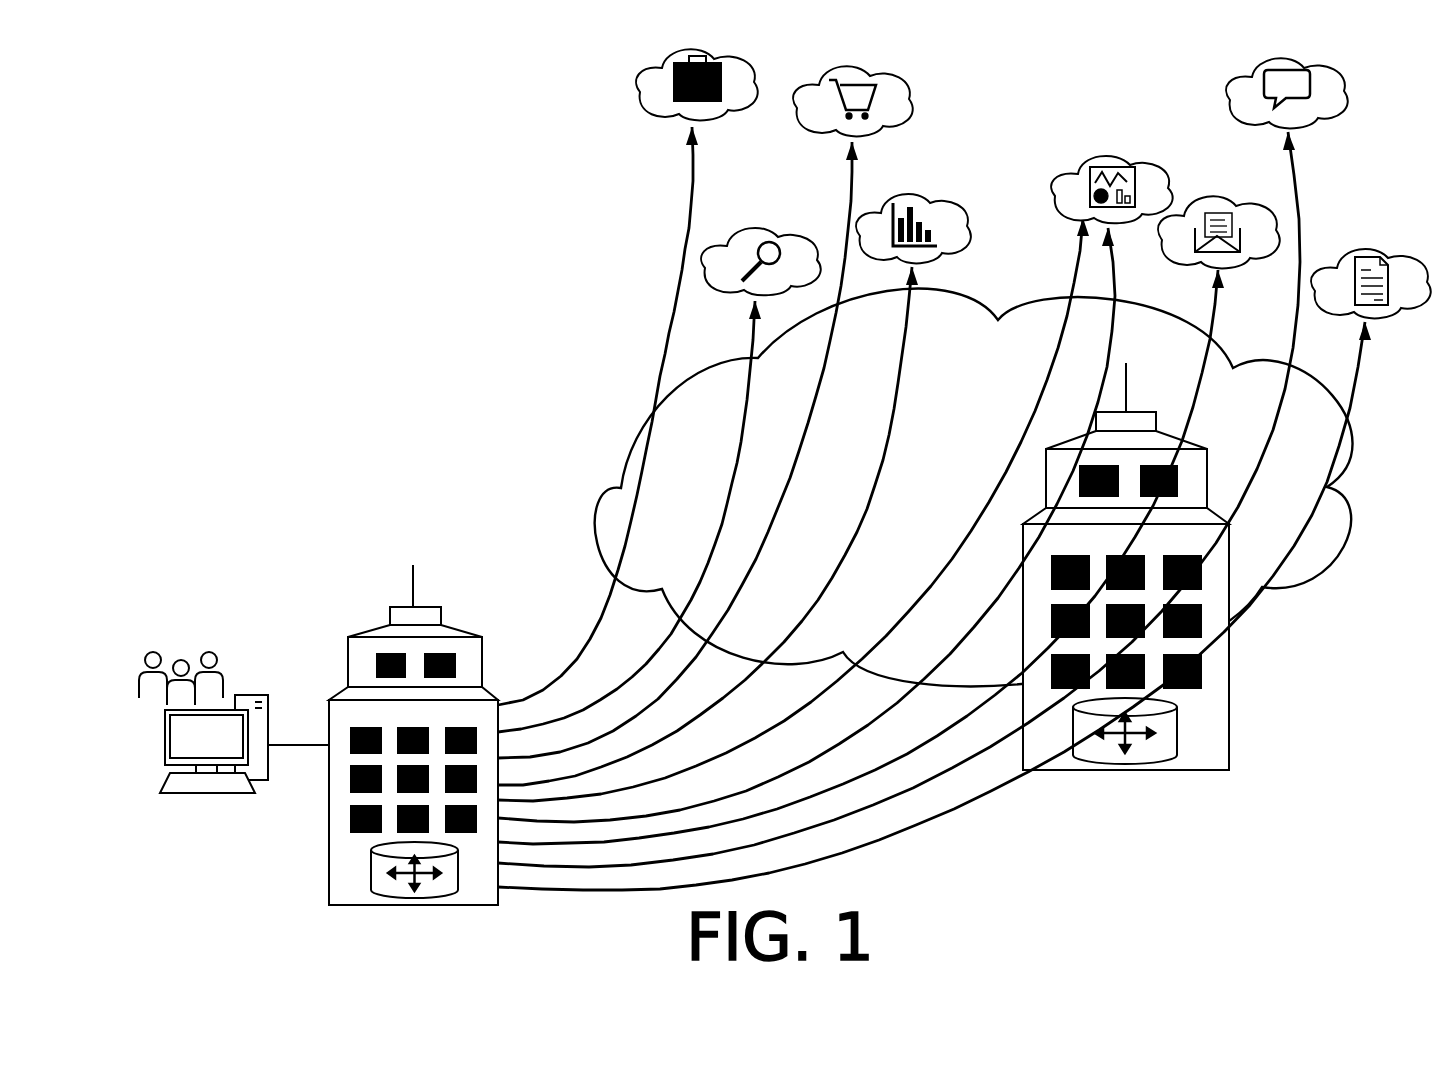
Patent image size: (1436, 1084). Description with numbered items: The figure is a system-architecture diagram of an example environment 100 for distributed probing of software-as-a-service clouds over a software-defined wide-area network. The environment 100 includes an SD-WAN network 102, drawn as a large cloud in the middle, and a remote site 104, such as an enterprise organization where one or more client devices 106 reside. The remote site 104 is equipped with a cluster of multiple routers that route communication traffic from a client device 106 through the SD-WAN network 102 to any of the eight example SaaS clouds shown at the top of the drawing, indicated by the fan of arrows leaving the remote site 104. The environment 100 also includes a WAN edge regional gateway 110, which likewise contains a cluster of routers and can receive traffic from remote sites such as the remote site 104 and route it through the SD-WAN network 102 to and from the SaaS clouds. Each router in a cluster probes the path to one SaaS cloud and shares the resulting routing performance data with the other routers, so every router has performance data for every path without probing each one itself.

The environment 100 is at (255, 215).
The SD-WAN network 102 is at (990, 462).
The remote site 104 is at (385, 594).
The client devices 106 is at (195, 880).
The WAN edge regional gateway 110 is at (1214, 812).